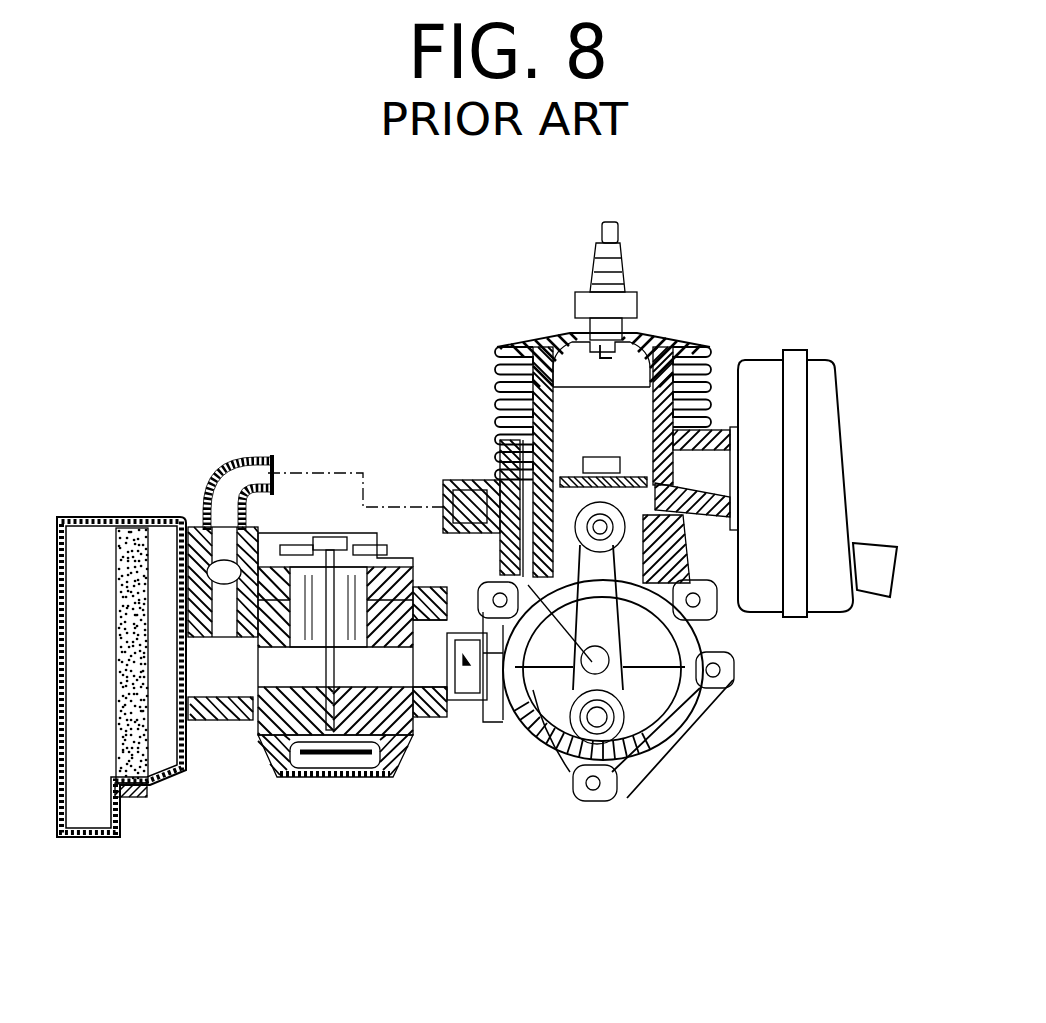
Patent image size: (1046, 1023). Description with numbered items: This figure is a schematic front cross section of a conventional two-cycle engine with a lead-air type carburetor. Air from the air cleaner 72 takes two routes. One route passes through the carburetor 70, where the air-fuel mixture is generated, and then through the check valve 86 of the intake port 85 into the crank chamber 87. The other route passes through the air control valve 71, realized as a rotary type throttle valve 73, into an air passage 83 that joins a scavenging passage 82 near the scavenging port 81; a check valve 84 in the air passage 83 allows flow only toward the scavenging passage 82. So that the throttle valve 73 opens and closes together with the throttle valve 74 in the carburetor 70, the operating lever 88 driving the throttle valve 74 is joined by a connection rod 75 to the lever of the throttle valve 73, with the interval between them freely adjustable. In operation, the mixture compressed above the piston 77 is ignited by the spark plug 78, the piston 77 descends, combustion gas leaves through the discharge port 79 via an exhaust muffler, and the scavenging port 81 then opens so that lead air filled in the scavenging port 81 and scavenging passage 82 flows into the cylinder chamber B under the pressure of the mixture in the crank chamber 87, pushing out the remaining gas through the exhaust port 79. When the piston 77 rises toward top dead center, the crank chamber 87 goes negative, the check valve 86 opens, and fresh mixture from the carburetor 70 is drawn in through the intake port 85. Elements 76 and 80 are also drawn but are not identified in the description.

The carburetor 70 is at (402, 544).
The air control valve 71 is at (193, 503).
The air cleaner 72 is at (97, 503).
The rotary type throttle valve 73 is at (172, 520).
The throttle valve 74 is at (263, 767).
The connection rod 75 is at (347, 537).
The cylinder head 76 is at (640, 333).
The piston 77 is at (712, 368).
The spark plug 78 is at (620, 288).
The discharge port 79 is at (640, 475).
The recoil starter housing 80 is at (832, 481).
The scavenging port 81 is at (597, 453).
The scavenging passage 82 is at (620, 692).
The air passage 83 is at (323, 470).
The check valve 84 is at (453, 480).
The intake port 85 is at (527, 548).
The check valve 86 is at (474, 670).
The crank chamber 87 is at (657, 698).
The operating lever 88 is at (297, 545).
The cylinder chamber B is at (583, 368).